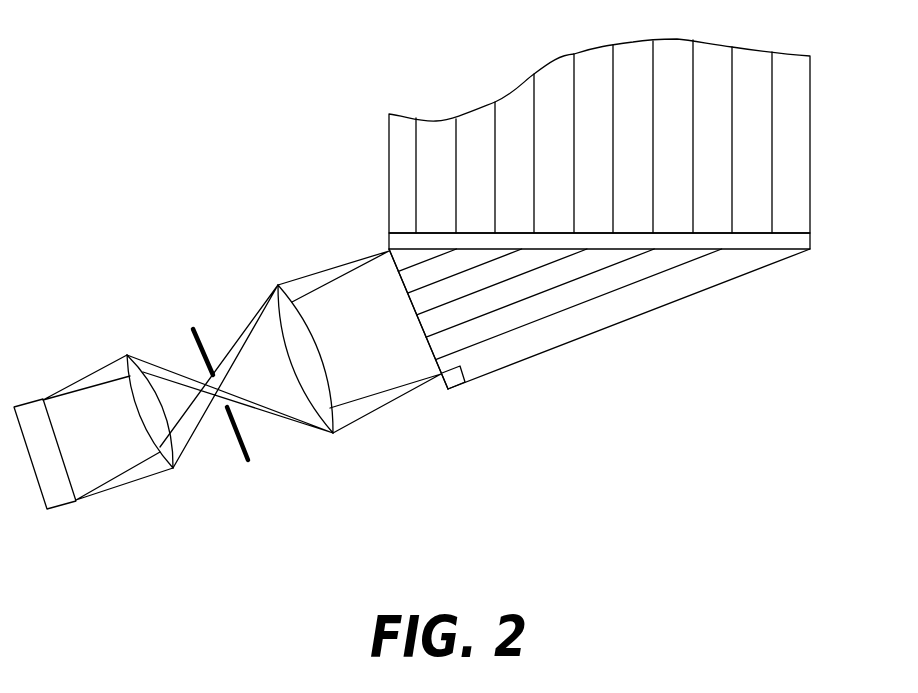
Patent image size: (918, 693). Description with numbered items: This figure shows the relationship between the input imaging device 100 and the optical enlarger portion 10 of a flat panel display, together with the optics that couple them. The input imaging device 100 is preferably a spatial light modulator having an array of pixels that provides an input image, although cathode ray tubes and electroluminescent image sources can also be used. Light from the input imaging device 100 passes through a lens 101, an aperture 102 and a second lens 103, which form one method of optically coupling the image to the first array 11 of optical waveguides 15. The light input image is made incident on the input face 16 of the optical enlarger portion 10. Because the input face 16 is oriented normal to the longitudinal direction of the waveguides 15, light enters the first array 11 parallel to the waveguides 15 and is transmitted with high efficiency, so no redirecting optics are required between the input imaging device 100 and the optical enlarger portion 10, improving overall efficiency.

The optical enlarger portion 10 is at (815, 148).
The first array 11 is at (635, 315).
The optical waveguides 15 is at (550, 337).
The input face 16 is at (413, 335).
The input imaging device 100 is at (31, 409).
The lens 101 is at (173, 470).
The aperture 102 is at (193, 329).
The lens 103 is at (278, 285).